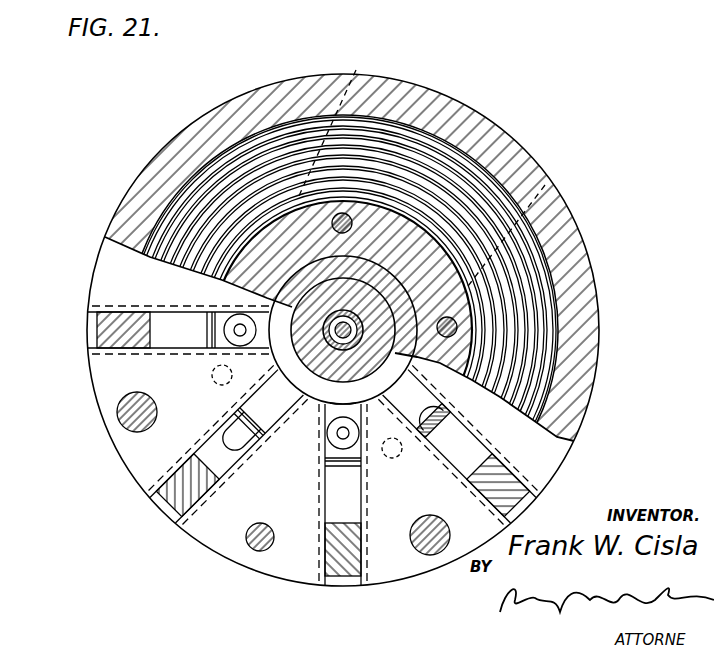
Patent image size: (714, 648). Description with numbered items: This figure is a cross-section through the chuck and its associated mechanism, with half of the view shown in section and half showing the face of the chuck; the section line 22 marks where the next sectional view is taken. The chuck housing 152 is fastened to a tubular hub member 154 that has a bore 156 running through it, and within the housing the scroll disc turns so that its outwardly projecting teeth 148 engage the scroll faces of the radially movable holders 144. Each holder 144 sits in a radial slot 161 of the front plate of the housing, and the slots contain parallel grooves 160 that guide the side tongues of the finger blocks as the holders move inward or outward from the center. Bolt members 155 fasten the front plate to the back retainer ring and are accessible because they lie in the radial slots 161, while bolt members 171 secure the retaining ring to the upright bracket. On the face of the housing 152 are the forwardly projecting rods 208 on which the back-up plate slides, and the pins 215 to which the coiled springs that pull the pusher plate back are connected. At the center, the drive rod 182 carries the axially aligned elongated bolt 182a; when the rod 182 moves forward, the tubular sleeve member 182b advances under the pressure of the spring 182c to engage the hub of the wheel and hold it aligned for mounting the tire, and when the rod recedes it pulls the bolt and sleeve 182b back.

The section line 22- 22 is at (615, 200).
The radially movable holder 144 is at (130, 310).
The outwardly projecting teeth 148 is at (253, 180).
The chuck housing 152 is at (328, 74).
The tubular hub member 154 is at (300, 279).
The bolt member 155 is at (350, 214).
The bore 156 is at (384, 284).
The parallel groove 160 is at (90, 305).
The radial slot 161 is at (437, 416).
The bolt member 171 is at (403, 477).
The drive rod 182 is at (292, 372).
The elongated bolt 182a is at (259, 419).
The tubular sleeve member 182b is at (381, 292).
The spring 182c is at (363, 406).
The forwardly projecting rod 208 is at (157, 412).
The pin 215 is at (257, 550).